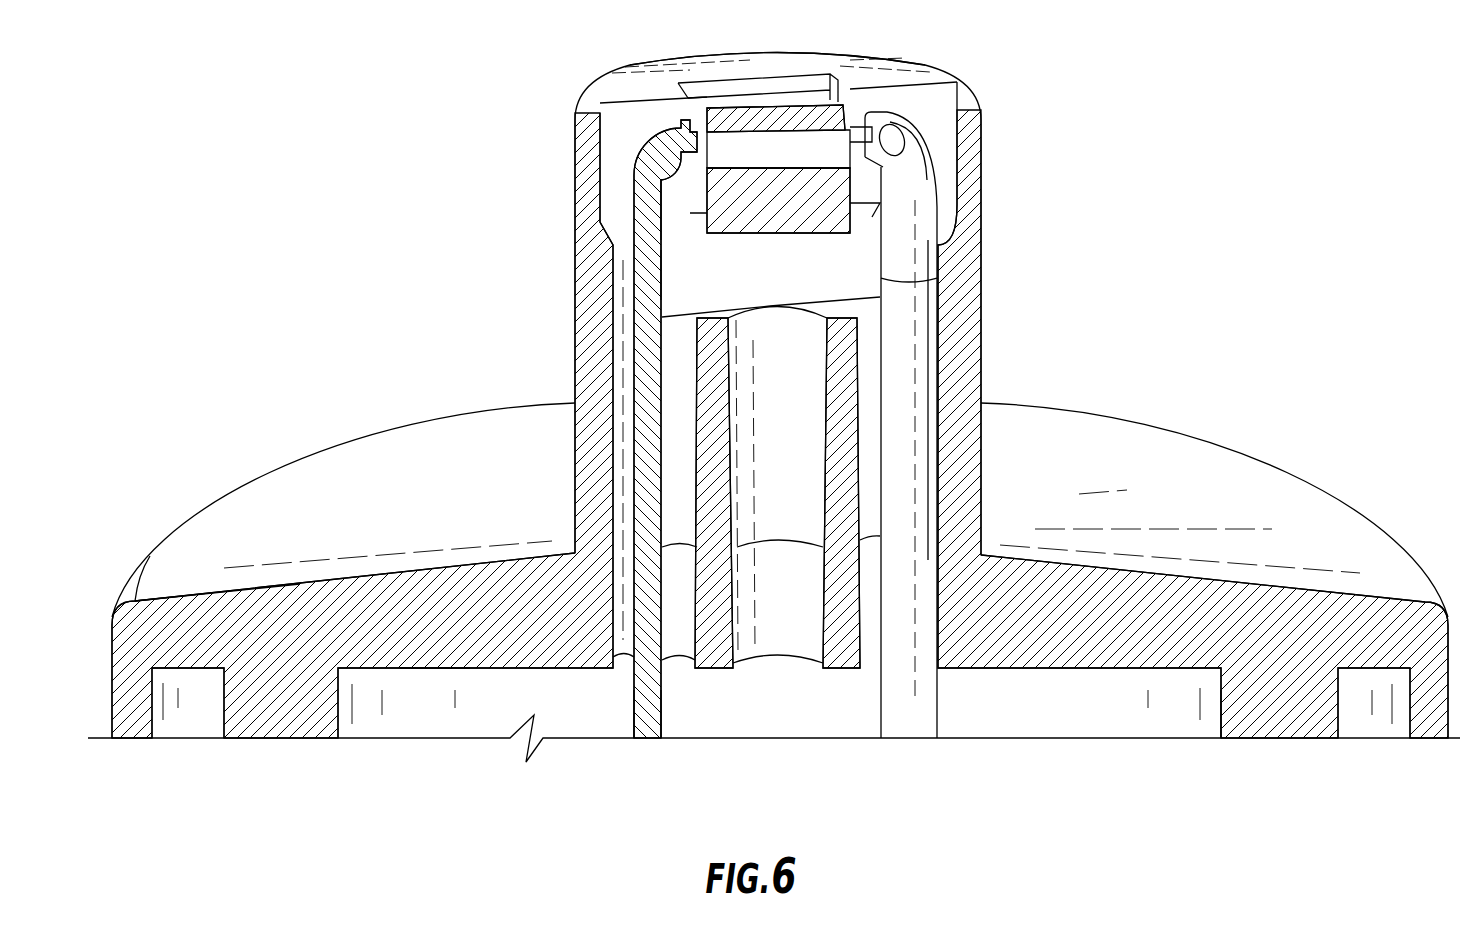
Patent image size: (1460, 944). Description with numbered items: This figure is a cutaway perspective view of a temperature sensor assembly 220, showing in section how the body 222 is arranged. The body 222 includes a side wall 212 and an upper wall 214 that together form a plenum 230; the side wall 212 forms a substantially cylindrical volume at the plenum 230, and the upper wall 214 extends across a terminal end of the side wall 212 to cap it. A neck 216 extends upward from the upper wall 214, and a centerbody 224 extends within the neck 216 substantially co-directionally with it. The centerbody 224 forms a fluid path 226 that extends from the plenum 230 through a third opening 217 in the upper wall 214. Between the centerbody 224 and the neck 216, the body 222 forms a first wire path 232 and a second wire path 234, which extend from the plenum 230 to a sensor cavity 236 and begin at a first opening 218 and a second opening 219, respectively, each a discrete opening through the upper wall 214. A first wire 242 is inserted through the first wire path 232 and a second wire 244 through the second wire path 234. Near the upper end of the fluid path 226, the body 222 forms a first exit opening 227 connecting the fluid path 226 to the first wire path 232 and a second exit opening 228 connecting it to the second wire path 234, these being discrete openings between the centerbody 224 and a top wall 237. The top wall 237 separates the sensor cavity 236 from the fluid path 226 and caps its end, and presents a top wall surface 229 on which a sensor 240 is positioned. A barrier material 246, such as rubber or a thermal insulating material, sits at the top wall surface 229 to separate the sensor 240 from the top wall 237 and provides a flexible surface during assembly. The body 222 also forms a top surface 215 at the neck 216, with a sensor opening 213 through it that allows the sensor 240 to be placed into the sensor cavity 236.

The side wall 212 is at (1220, 716).
The sensor opening 213 is at (793, 91).
The upper wall 214 is at (436, 676).
The top surface 215 is at (641, 77).
The neck 216 is at (580, 350).
The third opening 217 is at (755, 672).
The first opening 218 is at (695, 674).
The second opening 219 is at (863, 672).
The sensor assembly 220 is at (1204, 129).
The body 222 is at (194, 608).
The centerbody 224 is at (720, 488).
The fluid path 226 is at (798, 650).
The first exit opening 227 is at (693, 316).
The second exit opening 228 is at (853, 309).
The top wall surface 229 is at (674, 224).
The plenum 230 is at (1065, 727).
The first wire path 232 is at (677, 650).
The second wire path 234 is at (871, 649).
The sensor cavity 236 is at (868, 190).
The top wall 237 is at (678, 248).
The sensor 240 is at (795, 148).
The first wire 242 is at (642, 698).
The second wire 244 is at (918, 702).
The barrier material 246 is at (812, 217).